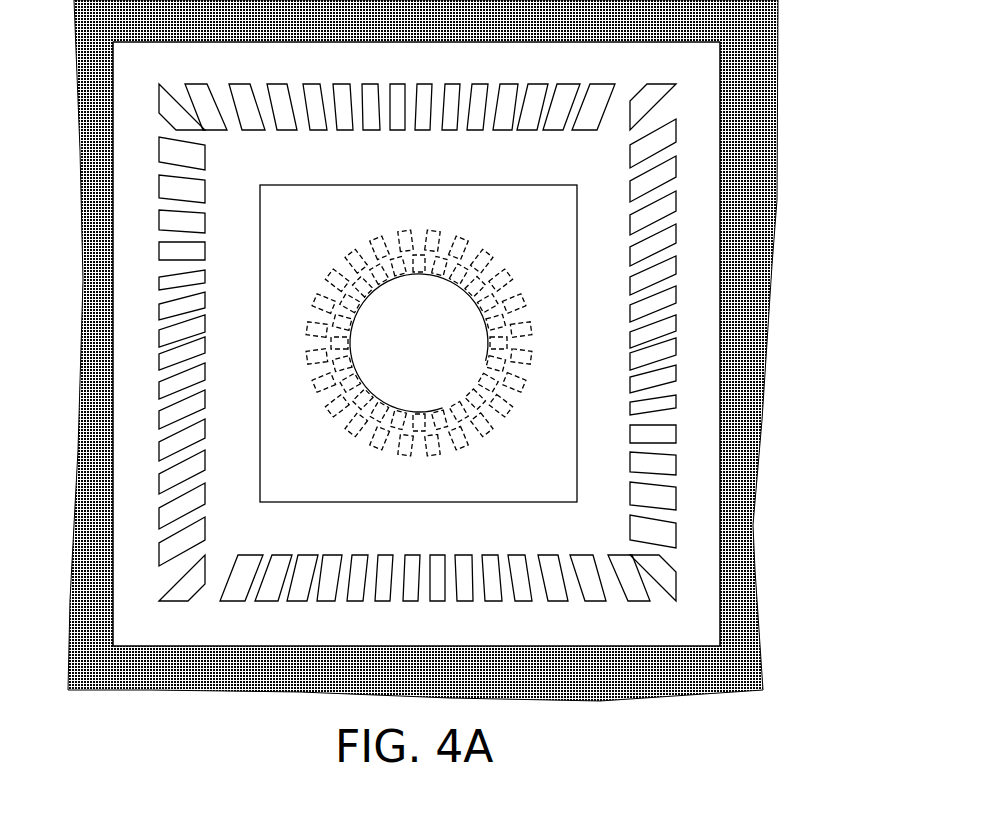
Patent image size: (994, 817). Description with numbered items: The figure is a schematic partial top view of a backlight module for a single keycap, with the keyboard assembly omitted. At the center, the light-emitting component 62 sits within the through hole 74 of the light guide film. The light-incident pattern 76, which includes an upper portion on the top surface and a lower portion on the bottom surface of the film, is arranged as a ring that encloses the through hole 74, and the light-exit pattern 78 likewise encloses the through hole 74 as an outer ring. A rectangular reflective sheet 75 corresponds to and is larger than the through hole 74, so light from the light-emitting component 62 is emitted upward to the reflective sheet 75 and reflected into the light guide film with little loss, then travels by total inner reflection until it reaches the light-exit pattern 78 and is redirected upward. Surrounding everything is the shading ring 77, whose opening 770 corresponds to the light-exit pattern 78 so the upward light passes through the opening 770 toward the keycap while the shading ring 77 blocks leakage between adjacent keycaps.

The light-emitting component 62 is at (441, 403).
The through hole 74 is at (506, 333).
The light-incident pattern 76 is at (530, 383).
The light-exit pattern 78 is at (677, 435).
The shading ring 77 is at (745, 472).
The reflective sheet 75 is at (577, 485).
The opening 770 is at (700, 638).